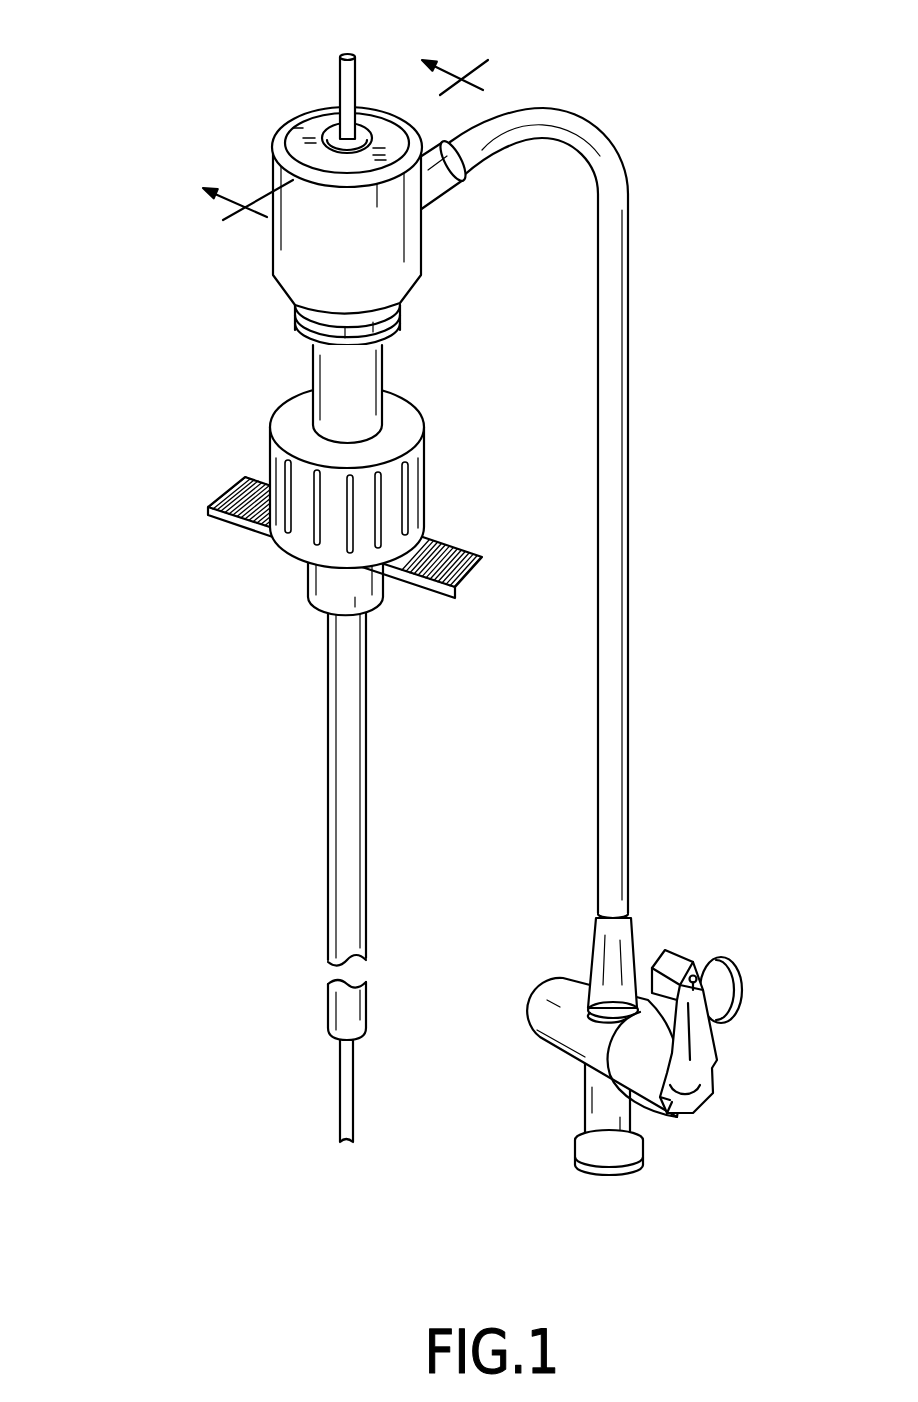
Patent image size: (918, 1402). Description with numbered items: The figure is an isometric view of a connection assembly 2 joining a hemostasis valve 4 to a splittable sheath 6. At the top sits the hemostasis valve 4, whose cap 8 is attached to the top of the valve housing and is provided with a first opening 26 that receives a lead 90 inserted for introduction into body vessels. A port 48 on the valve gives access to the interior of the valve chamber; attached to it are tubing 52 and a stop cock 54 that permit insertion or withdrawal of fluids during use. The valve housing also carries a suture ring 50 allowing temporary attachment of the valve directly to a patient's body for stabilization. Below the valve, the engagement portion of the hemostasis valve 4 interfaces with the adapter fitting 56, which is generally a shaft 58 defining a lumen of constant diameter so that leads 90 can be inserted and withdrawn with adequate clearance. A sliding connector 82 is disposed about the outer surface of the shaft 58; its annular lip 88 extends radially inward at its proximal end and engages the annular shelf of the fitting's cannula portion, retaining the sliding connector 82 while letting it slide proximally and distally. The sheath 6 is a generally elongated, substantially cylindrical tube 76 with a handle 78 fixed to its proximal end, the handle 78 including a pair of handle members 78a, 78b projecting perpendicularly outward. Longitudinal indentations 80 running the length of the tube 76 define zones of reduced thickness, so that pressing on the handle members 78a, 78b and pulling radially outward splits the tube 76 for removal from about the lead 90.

The connection assembly 2 is at (349, 150).
The hemostasis valve 4 is at (268, 182).
The splittable sheath 6 is at (327, 687).
The cap 8 is at (366, 120).
The first opening 26 is at (331, 126).
The port 48 is at (458, 143).
The suture ring 50 is at (293, 337).
The tubing 52 is at (628, 351).
The stop cock 54 is at (735, 968).
The adapter fitting 56 is at (390, 360).
The shaft 58 is at (325, 377).
The tube 76 is at (352, 903).
The handle 78 is at (272, 540).
The handle member 78a is at (200, 507).
The handle member 78b is at (467, 585).
The indentations 80 is at (329, 888).
The sliding connector 82 is at (413, 490).
The annular lip 88 is at (403, 417).
The lead 90 is at (356, 72).